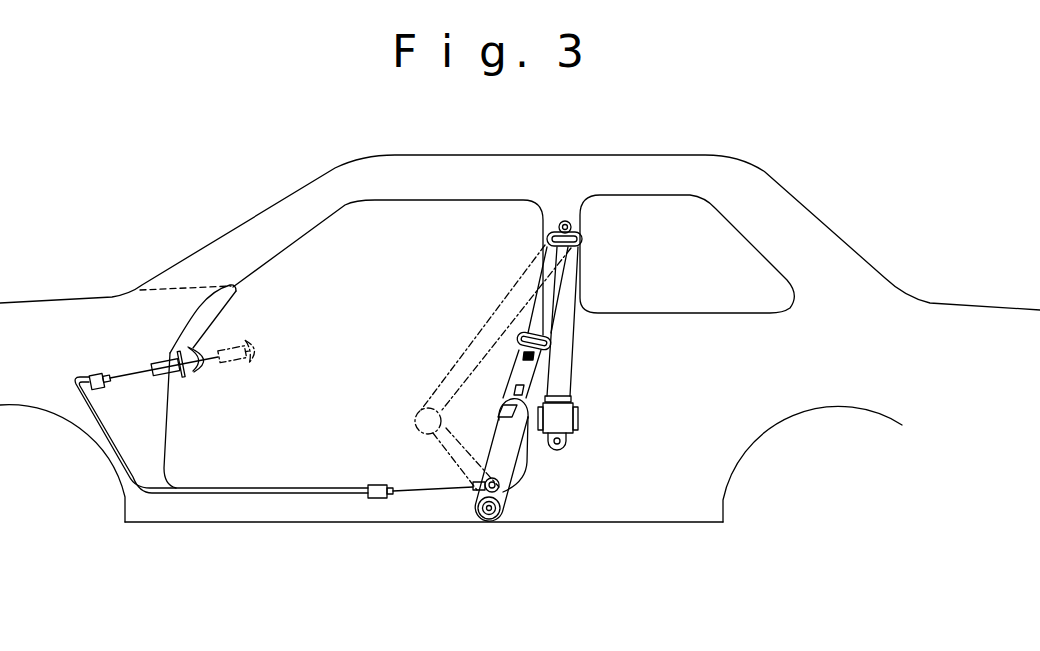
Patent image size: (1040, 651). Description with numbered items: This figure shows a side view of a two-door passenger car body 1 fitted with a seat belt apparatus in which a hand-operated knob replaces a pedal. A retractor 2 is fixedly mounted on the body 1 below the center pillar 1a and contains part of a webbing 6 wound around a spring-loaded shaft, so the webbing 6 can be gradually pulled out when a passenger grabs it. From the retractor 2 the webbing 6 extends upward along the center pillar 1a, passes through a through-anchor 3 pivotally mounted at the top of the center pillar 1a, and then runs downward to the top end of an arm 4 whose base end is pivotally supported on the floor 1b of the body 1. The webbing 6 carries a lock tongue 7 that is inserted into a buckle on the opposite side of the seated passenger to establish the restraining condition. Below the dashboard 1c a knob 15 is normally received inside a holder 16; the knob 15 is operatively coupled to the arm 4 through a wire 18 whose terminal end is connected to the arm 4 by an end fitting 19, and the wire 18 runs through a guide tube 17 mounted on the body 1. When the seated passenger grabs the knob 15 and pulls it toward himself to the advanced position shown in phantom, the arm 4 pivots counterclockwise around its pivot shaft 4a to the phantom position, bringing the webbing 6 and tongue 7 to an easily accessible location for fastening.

The body 1 is at (246, 215).
The center pillar 1a is at (582, 272).
The floor 1b is at (332, 518).
The dashboard 1c is at (219, 303).
The retractor 2 is at (560, 418).
The through-anchor 3 is at (573, 227).
The arm 4 is at (504, 452).
The pivot shaft 4a is at (490, 521).
The webbing 6 is at (545, 313).
The lock tongue 7 is at (545, 356).
The knob 15 is at (193, 368).
The holder 16 is at (158, 353).
The guide tube 17 is at (207, 488).
The wire 18 is at (128, 378).
The end fitting 19 is at (500, 494).